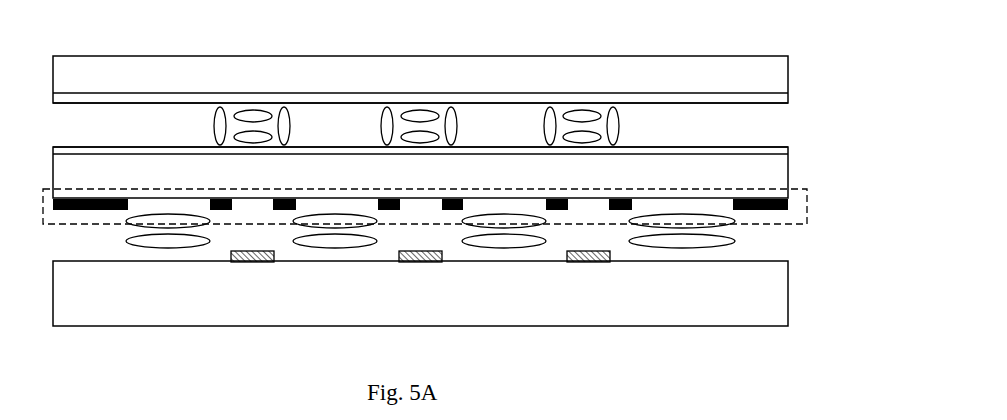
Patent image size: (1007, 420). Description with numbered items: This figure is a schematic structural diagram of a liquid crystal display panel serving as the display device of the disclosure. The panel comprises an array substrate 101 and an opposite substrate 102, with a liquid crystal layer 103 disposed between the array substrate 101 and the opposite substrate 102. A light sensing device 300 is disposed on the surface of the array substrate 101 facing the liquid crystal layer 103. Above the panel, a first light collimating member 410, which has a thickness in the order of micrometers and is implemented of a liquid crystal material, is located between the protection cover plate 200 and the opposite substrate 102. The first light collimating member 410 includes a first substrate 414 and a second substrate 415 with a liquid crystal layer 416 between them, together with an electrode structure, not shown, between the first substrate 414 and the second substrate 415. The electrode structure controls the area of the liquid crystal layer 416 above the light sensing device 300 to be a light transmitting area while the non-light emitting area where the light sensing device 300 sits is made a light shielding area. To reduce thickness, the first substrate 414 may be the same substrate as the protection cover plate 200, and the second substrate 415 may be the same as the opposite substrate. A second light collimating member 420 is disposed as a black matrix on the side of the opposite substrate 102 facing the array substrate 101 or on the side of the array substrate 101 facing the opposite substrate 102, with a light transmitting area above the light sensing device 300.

The protection cover plate 200 is at (778, 74).
The second substrate 415 is at (778, 99).
The liquid crystal layer 416 is at (617, 124).
The first light collimating member 410 is at (862, 99).
The first substrate 414 is at (778, 149).
The opposite substrate 102 is at (765, 176).
The second light collimating member 420 is at (807, 205).
The liquid crystal layer 103 is at (112, 228).
The light sensing device 300 is at (610, 258).
The array substrate 101 is at (767, 296).